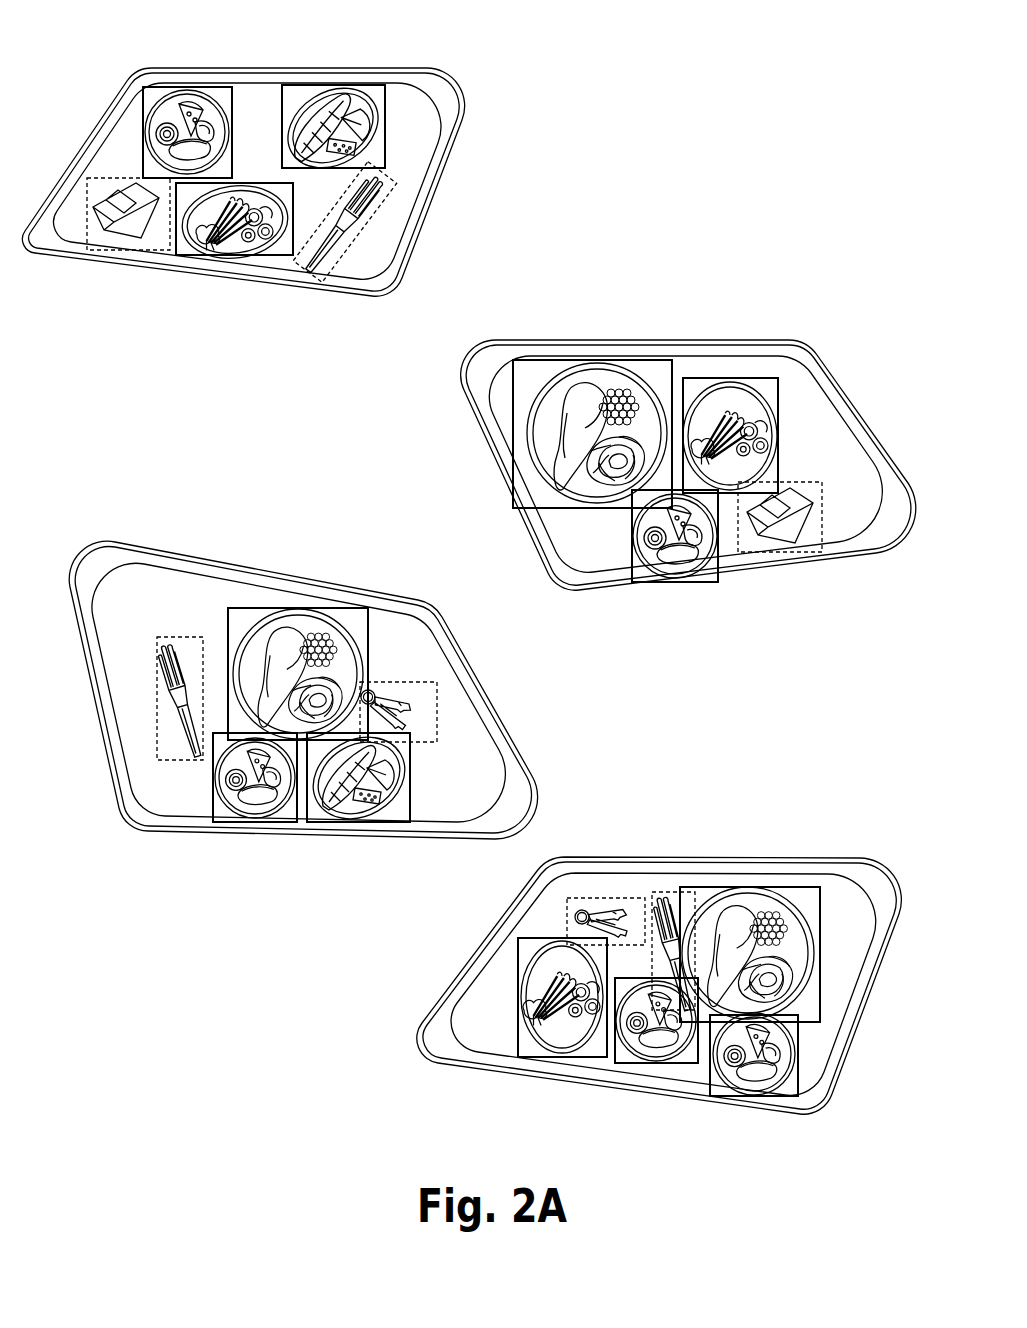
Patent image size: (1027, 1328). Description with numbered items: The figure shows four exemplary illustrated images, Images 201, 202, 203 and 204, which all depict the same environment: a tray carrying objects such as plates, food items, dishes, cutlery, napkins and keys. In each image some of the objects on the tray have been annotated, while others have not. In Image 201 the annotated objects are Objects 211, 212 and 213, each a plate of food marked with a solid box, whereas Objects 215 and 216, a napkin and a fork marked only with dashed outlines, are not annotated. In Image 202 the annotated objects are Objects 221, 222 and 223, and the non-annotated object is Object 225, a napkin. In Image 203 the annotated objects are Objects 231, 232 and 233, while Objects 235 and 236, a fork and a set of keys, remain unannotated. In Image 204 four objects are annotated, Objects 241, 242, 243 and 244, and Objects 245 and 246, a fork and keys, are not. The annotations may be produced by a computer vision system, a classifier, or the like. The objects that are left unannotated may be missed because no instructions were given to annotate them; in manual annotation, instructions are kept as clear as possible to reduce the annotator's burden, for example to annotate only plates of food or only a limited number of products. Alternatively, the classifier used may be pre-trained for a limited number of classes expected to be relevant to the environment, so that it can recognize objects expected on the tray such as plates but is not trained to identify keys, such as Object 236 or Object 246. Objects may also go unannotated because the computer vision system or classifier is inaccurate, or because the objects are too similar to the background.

The image 201 is at (87, 82).
The image 202 is at (830, 348).
The image 203 is at (103, 517).
The image 204 is at (849, 793).
The object 211 is at (143, 98).
The object 212 is at (385, 125).
The object 213 is at (250, 255).
The object 215 is at (137, 252).
The object 216 is at (373, 217).
The object 221 is at (595, 360).
The object 222 is at (727, 378).
The object 223 is at (655, 583).
The object 225 is at (760, 553).
The object 231 is at (318, 608).
The object 232 is at (287, 822).
The object 233 is at (388, 822).
The object 235 is at (167, 760).
The object 236 is at (437, 700).
The object 241 is at (783, 887).
The object 242 is at (798, 1096).
The object 243 is at (615, 1066).
The object 244 is at (522, 1020).
The object 245 is at (658, 892).
The object 246 is at (600, 898).